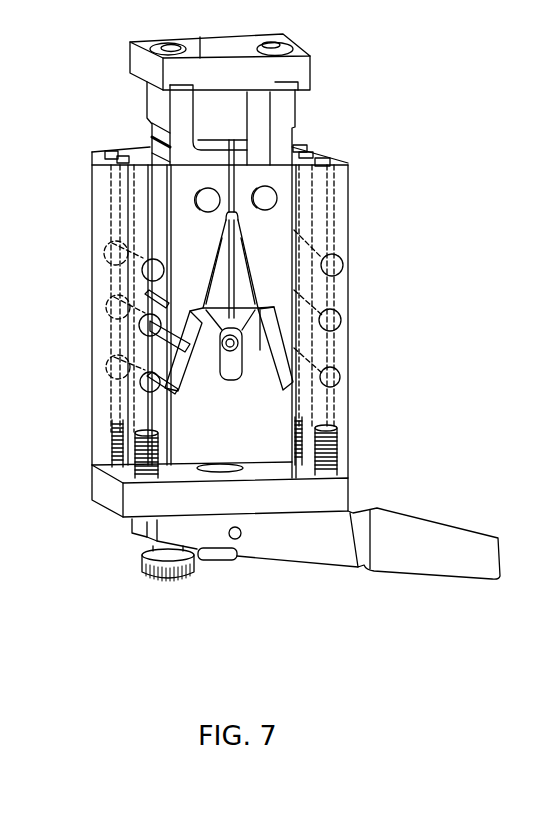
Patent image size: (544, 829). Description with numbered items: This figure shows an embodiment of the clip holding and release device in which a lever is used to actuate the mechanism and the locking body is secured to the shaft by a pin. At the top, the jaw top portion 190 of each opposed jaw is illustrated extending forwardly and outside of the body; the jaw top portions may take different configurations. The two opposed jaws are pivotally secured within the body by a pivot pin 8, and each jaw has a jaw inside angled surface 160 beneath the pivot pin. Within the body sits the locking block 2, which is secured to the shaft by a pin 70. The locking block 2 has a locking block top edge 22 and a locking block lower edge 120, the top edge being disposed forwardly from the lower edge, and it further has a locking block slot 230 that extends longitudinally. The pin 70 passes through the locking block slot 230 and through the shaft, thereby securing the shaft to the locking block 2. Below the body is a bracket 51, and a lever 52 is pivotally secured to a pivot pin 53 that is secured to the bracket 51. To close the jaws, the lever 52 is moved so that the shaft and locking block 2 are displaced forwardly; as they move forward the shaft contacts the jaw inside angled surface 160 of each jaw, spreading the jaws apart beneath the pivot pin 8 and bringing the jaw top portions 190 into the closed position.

The jaw top portion 190 is at (300, 74).
The pivot pin 8 is at (268, 198).
The jaw inside angled surface 160 is at (243, 268).
The pin 70 is at (235, 333).
The locking block top edge 22 is at (235, 355).
The locking block lower edge 120 is at (287, 392).
The locking block slot 230 is at (227, 362).
The locking block 2 is at (270, 427).
The bracket 51 is at (320, 497).
The lever 52 is at (457, 527).
The pivot pin 53 is at (244, 535).